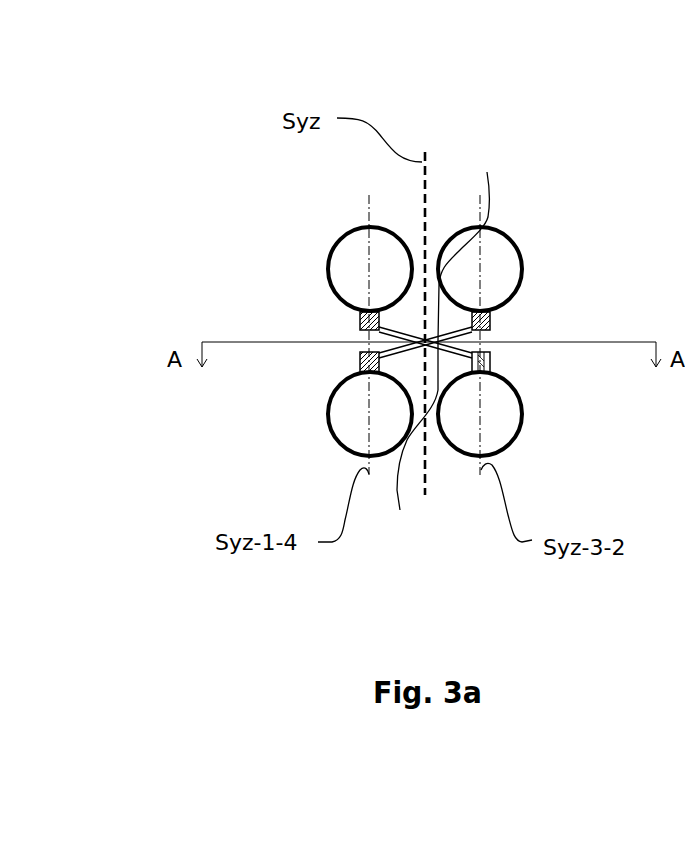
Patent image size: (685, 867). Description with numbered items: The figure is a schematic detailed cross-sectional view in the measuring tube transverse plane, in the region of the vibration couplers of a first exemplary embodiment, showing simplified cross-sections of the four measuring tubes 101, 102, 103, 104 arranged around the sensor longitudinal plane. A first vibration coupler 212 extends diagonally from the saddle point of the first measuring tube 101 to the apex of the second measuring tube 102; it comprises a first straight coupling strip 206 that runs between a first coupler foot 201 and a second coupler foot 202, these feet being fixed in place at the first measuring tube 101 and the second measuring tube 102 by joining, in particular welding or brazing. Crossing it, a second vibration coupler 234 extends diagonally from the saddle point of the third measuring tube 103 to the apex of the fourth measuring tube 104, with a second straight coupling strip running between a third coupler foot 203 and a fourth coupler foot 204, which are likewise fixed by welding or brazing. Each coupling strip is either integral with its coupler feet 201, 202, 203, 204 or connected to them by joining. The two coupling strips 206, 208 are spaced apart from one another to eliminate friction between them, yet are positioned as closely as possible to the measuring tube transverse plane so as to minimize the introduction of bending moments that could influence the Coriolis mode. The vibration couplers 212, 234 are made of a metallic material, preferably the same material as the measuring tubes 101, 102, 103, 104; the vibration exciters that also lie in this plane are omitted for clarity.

The first measuring tube 101 is at (348, 229).
The second measuring tube 102 is at (514, 443).
The third measuring tube 103 is at (510, 238).
The fourth measuring tube 104 is at (340, 445).
The first coupler foot 201 is at (358, 317).
The second coupler foot 202 is at (491, 360).
The third coupler foot 203 is at (491, 317).
The fourth coupler foot 204 is at (358, 360).
The coupling strip 206 is at (407, 438).
The coupling strip 208 is at (480, 241).
The first vibration coupler 212 is at (360, 332).
The second vibration coupler 234 is at (491, 332).